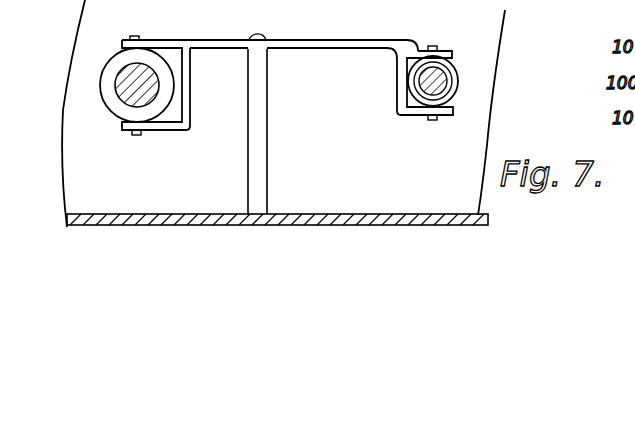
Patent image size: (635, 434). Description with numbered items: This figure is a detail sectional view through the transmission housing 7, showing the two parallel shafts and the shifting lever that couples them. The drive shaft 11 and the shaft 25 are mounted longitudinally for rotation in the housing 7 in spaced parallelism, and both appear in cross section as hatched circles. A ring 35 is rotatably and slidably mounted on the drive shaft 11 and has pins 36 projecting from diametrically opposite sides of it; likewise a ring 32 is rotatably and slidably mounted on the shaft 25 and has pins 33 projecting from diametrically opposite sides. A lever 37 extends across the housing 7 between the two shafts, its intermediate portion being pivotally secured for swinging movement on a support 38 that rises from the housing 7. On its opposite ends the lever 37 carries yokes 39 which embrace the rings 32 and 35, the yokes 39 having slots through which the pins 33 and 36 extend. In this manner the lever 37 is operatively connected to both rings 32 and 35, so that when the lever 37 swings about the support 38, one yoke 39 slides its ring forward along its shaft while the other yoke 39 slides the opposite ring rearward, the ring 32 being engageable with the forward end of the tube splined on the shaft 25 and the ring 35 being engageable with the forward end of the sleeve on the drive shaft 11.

The housing 7 is at (413, 212).
The drive shaft 11 is at (116, 90).
The shaft 25 is at (444, 85).
The ring 32 is at (451, 72).
The pins 33 is at (137, 36).
The ring 35 is at (103, 75).
The pins 36 is at (136, 137).
The lever 37 is at (212, 46).
The support 38 is at (250, 70).
The yokes 39 is at (190, 75).